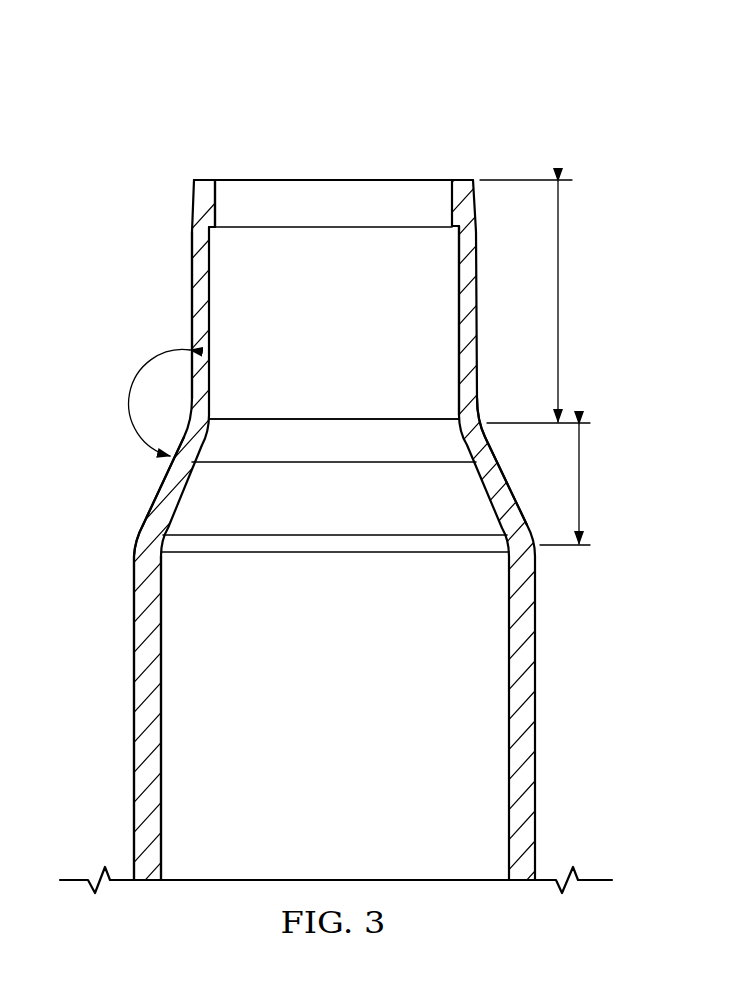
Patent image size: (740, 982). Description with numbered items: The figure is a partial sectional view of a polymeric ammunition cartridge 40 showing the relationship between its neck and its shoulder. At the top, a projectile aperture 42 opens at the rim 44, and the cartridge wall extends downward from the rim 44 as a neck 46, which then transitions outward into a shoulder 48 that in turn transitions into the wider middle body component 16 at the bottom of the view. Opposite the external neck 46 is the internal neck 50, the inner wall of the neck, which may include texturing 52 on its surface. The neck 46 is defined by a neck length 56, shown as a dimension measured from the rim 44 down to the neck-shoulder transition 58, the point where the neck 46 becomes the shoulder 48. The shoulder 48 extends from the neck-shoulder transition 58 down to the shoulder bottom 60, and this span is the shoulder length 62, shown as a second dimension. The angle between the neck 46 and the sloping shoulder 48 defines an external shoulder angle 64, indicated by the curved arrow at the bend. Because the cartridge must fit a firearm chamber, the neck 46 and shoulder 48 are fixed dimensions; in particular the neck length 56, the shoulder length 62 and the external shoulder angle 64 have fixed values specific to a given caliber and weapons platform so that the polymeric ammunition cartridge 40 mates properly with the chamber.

The polymeric ammunition cartridge 40 is at (436, 76).
The projectile aperture 42 is at (326, 179).
The rim 44 is at (204, 179).
The neck 46 is at (192, 272).
The shoulder 48 is at (157, 488).
The internal neck 50 is at (459, 258).
The texturing 52 is at (347, 336).
The neck length 56 is at (559, 302).
The neck-shoulder transition 58 is at (478, 408).
The shoulder bottom 60 is at (134, 545).
The shoulder length 62 is at (580, 483).
The external shoulder angle 64 is at (133, 397).
The middle body component 16 is at (133, 712).